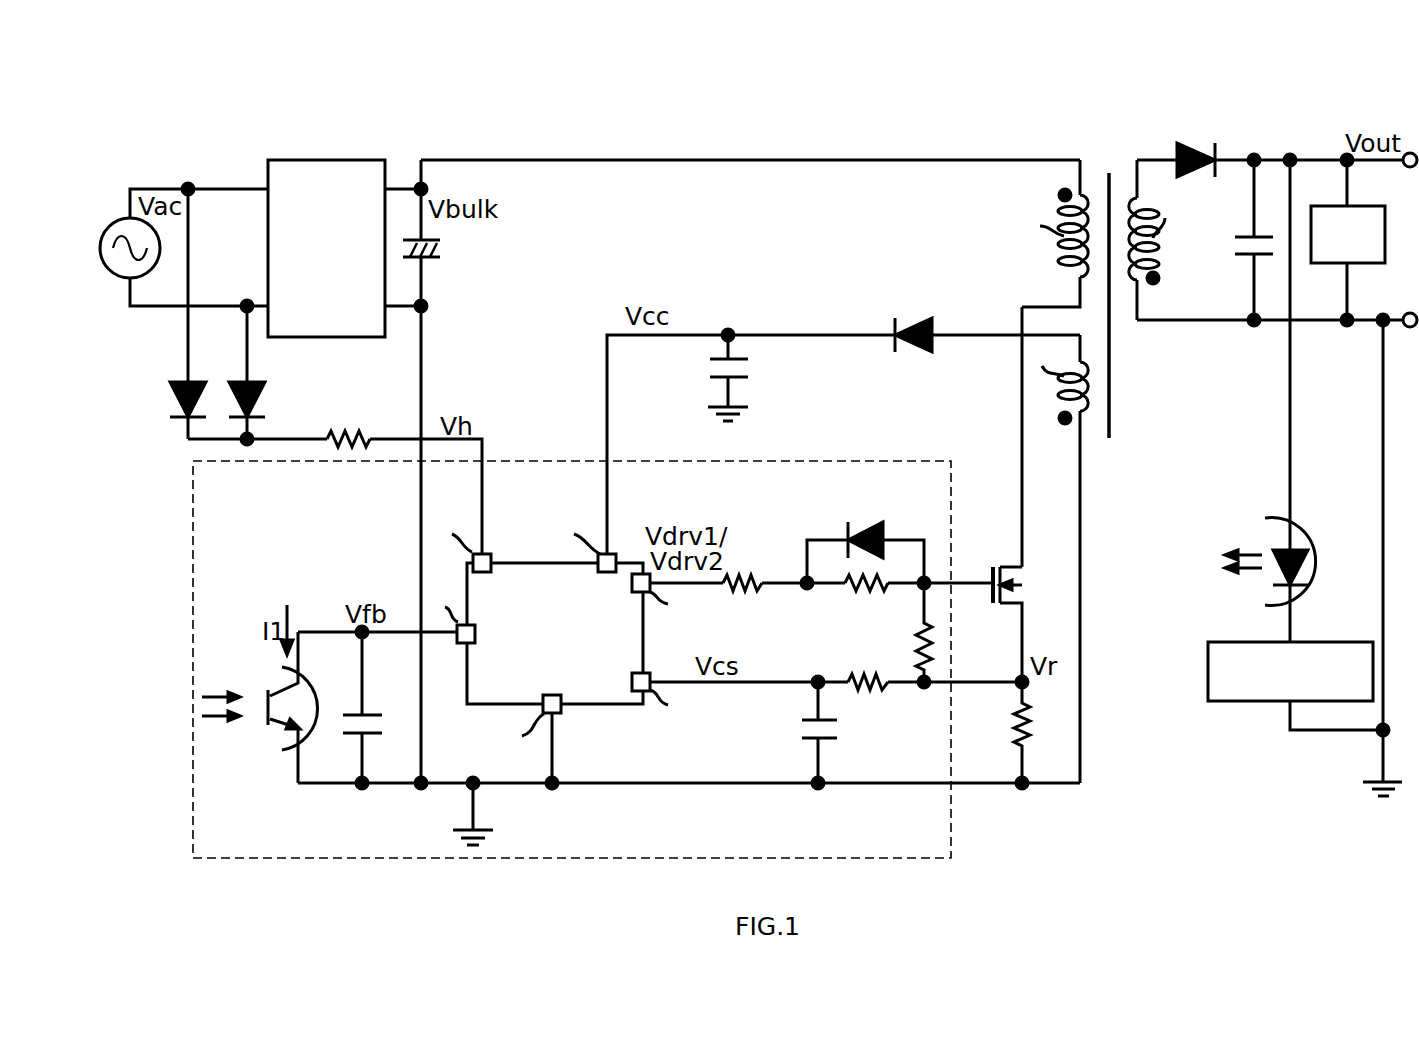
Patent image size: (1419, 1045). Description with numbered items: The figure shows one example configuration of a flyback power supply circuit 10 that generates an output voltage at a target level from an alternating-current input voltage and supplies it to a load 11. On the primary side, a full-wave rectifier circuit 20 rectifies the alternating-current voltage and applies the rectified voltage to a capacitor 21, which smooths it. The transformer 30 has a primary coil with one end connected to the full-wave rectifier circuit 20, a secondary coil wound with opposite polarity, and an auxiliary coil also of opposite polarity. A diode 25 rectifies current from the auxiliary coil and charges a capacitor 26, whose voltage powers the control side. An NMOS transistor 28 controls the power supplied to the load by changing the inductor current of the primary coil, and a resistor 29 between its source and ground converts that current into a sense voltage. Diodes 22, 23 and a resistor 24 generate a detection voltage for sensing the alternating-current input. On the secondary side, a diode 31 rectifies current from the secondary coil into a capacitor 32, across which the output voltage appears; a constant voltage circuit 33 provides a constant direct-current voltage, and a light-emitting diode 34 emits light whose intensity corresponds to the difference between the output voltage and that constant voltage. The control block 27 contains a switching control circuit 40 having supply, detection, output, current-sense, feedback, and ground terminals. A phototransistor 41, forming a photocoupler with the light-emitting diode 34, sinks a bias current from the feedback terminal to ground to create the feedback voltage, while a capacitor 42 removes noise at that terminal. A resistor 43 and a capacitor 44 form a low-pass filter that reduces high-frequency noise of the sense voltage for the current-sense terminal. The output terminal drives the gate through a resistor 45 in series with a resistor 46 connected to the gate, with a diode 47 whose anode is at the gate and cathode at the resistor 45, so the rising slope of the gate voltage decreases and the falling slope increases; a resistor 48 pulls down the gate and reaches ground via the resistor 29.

The power supply circuit 10 is at (876, 116).
The load 11 is at (1379, 206).
The full-wave rectifier circuit 20 is at (298, 158).
The capacitor 21 is at (440, 261).
The diode 22 is at (173, 415).
The diode 23 is at (252, 415).
The resistor 24 is at (346, 434).
The diode 25 is at (932, 331).
The capacitor 26 is at (748, 377).
The control block 27 is at (930, 460).
The NMOS transistor 28 is at (1009, 567).
The resistor 29 is at (1033, 728).
The transformer 30 is at (1141, 138).
The diode 31 is at (1199, 146).
The capacitor 32 is at (1240, 237).
The constant voltage circuit 33 is at (1351, 640).
The light-emitting diode 34 is at (1265, 518).
The switching control circuit 40 is at (516, 560).
The phototransistor 41 is at (286, 753).
The capacitor 42 is at (379, 715).
The resistor 43 is at (877, 689).
The capacitor 44 is at (803, 718).
The resistor 45 is at (746, 581).
The resistor 46 is at (856, 597).
The diode 47 is at (880, 522).
The resistor 48 is at (911, 643).